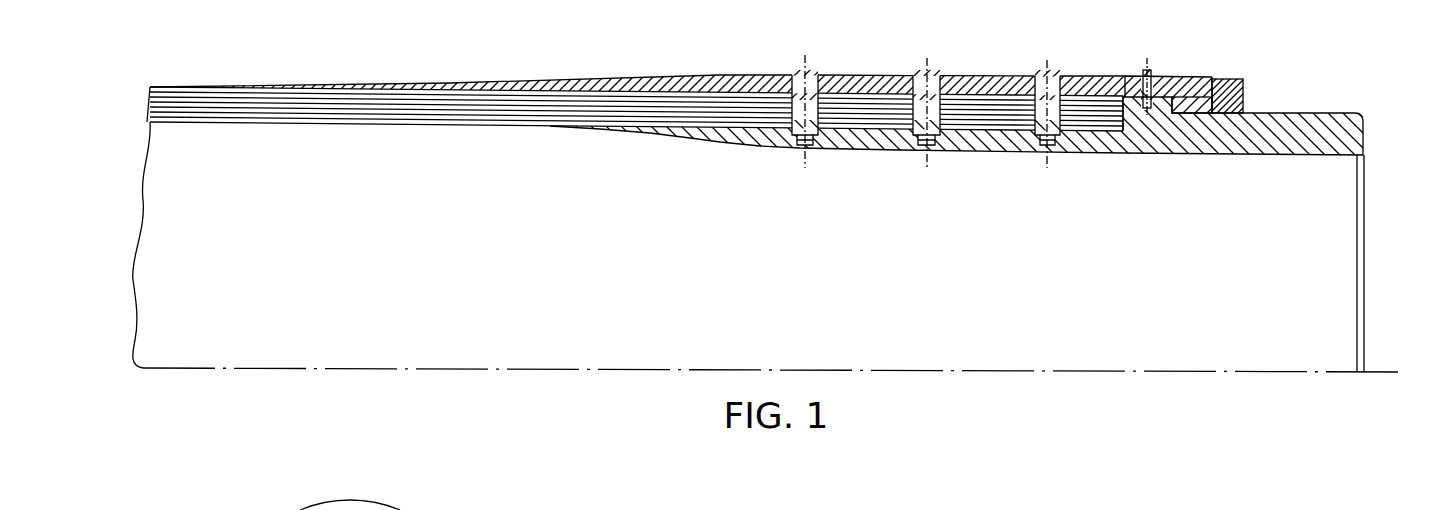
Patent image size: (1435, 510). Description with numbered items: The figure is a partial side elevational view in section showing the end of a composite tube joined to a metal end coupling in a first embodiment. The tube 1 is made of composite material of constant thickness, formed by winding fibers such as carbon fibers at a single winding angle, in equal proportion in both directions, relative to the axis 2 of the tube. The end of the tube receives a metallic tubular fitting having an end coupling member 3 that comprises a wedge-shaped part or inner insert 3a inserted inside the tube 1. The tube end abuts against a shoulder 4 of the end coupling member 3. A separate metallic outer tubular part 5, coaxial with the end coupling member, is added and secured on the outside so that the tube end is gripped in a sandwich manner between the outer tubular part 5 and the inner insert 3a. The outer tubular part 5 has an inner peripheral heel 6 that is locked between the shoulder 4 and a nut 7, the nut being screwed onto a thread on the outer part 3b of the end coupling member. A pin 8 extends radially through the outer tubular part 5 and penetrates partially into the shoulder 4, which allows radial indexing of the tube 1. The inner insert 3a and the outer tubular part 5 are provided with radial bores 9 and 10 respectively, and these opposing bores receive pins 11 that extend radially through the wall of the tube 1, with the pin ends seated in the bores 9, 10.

The tube 1 is at (292, 113).
The axis 2 is at (607, 368).
The end coupling member 3 is at (1228, 161).
The inner insert 3a is at (882, 146).
The outer part of the end coupling member 3b is at (1283, 143).
The shoulder 4 is at (1142, 102).
The outer tubular part 5 is at (873, 77).
The inner peripheral heel 6 is at (1195, 100).
The nut 7 is at (1246, 84).
The pin 8 is at (1152, 73).
The radial bores 9 is at (785, 147).
The radial bores 10 is at (799, 77).
The pins 11 is at (812, 77).